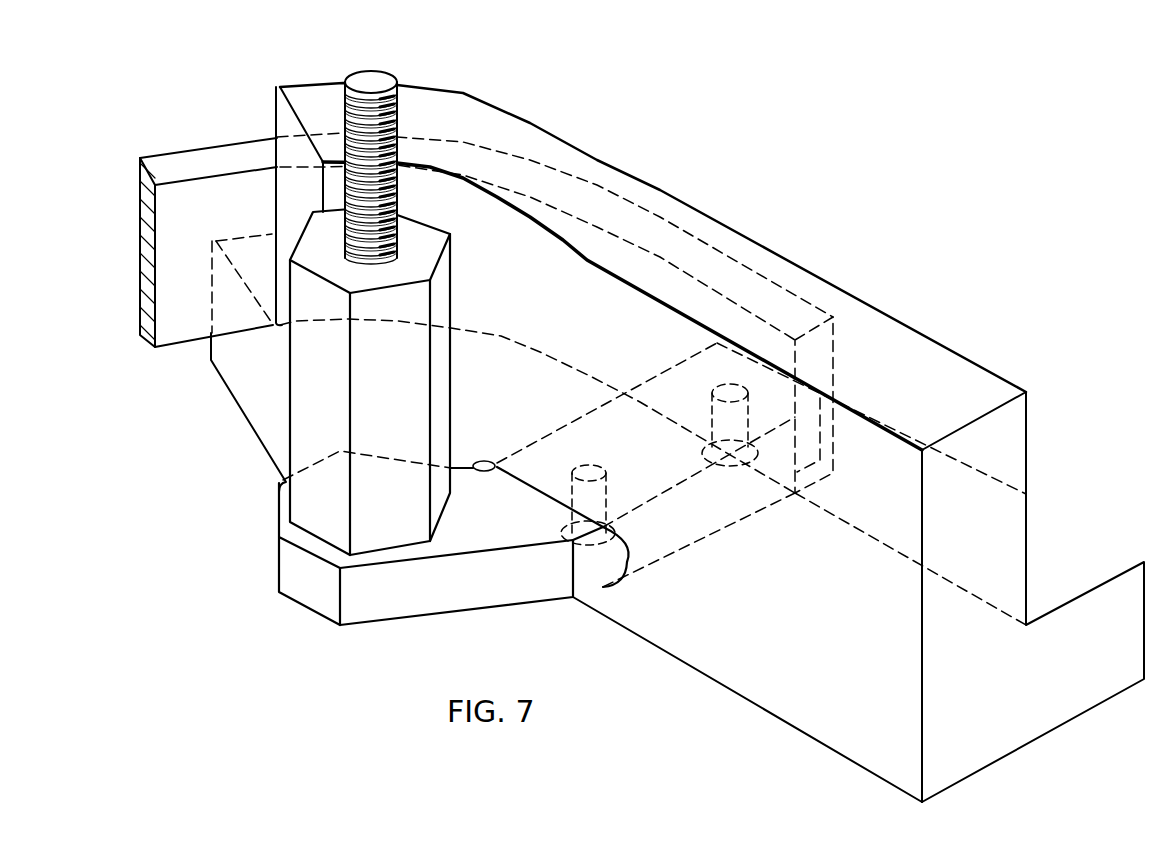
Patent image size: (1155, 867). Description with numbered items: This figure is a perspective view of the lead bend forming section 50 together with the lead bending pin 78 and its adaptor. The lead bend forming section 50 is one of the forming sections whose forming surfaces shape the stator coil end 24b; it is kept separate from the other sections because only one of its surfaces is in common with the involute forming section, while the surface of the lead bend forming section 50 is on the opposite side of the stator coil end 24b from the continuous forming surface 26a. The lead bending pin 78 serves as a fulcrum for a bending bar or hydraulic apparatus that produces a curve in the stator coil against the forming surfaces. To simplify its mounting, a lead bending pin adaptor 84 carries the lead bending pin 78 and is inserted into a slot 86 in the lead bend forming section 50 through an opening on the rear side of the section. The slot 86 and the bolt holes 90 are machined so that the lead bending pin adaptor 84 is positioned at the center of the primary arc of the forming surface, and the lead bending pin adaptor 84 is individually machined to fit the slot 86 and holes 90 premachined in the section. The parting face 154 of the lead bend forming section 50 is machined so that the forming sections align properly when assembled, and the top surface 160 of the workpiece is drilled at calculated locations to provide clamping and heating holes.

The stator coil end 24b is at (175, 168).
The lead bending pin 78 is at (400, 109).
The top surface 160 is at (797, 276).
The lead bend forming section 50 is at (966, 345).
The face 154 is at (262, 432).
The bolt holes 90 is at (708, 421).
The forming surface 26a is at (1060, 537).
The slot 86 is at (612, 578).
The lead bending pin adaptor 84 is at (453, 599).